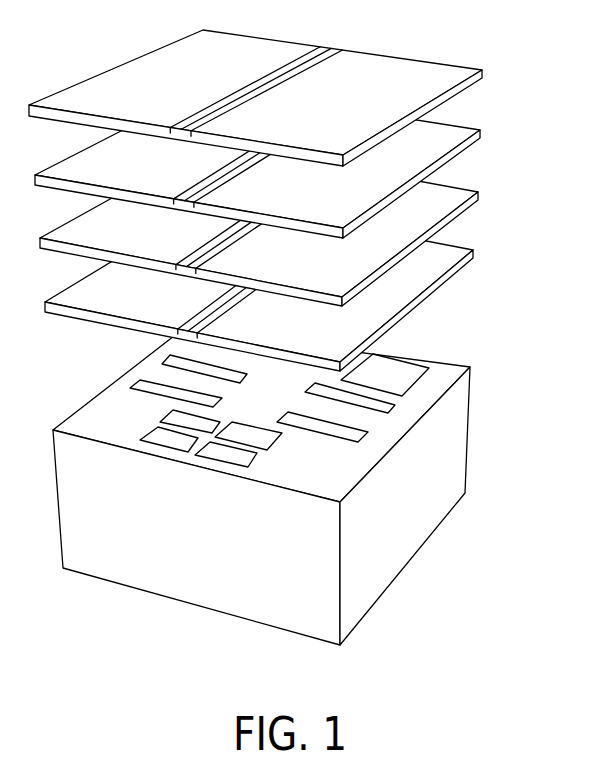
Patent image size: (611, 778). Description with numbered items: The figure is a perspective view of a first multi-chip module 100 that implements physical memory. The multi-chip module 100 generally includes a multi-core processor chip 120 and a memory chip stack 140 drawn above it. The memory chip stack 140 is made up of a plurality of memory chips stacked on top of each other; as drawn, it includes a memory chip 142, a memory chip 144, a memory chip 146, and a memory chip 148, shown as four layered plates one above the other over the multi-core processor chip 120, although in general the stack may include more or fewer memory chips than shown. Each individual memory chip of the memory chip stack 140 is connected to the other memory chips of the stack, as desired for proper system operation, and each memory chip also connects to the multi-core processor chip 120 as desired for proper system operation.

The multi-chip module 100 is at (308, 369).
The multi-core processor chip 120 is at (453, 370).
The memory chip stack 140 is at (308, 200).
The memory chip 142 is at (462, 263).
The memory chip 144 is at (467, 203).
The memory chip 146 is at (470, 140).
The memory chip 148 is at (471, 80).